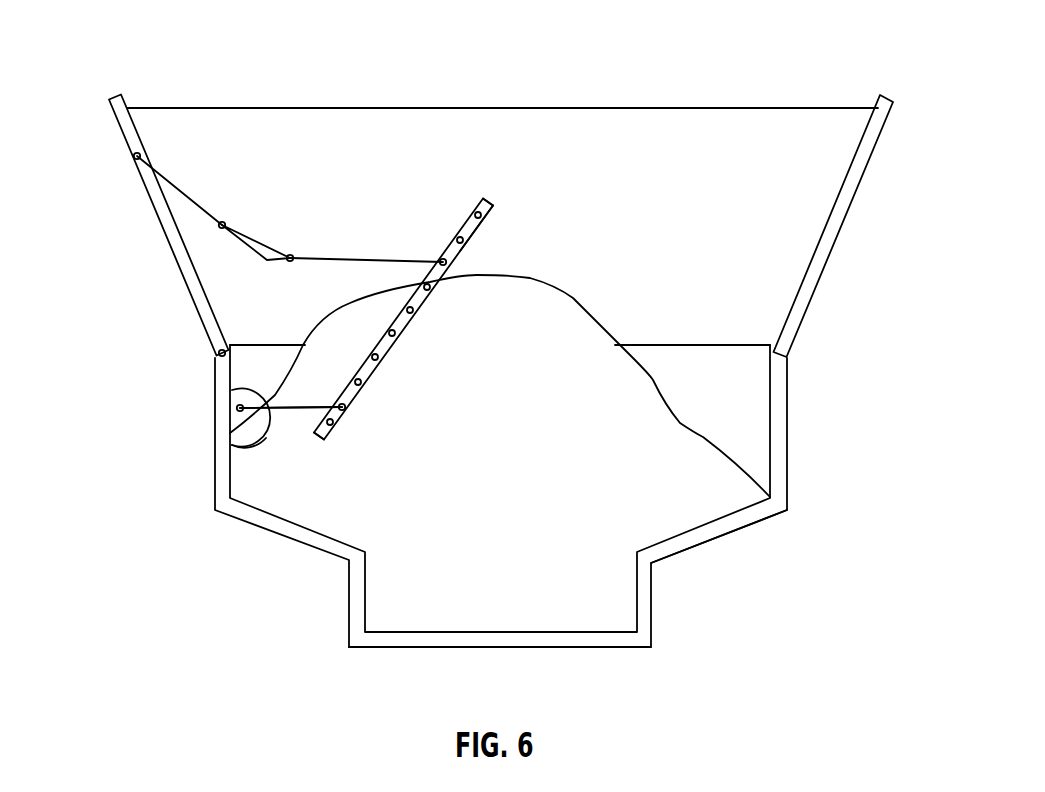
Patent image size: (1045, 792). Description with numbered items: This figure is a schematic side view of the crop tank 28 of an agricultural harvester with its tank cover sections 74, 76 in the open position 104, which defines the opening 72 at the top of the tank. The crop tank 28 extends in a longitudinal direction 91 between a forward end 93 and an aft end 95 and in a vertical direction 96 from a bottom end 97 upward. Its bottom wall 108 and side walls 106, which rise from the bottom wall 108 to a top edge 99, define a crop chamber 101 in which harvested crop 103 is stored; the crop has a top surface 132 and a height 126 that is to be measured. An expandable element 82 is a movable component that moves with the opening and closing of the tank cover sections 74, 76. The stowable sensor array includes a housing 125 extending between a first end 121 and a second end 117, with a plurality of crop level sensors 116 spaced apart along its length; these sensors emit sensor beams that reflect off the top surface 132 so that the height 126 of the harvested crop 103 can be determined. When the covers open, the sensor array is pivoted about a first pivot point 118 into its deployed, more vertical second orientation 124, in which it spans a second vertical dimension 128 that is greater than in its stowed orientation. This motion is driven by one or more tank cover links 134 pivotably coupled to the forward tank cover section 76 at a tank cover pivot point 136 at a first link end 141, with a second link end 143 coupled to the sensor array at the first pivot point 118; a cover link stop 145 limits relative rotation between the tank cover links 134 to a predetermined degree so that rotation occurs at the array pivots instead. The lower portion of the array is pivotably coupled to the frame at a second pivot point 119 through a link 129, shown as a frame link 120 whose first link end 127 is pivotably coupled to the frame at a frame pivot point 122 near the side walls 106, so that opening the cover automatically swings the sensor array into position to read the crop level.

The crop tank 28 is at (264, 77).
The opening 72 is at (503, 67).
The open position 104 is at (807, 61).
The crop chamber 101 is at (707, 147).
The expandable element 82 is at (599, 193).
The forward tank cover section 76 is at (169, 225).
The tank cover section 74 is at (834, 226).
The top edge 99 is at (233, 323).
The tank cover pivot point 136 is at (103, 173).
The first link end 141 is at (179, 175).
The cover link stop 145 is at (244, 201).
The tank cover link 134 is at (270, 221).
The second link end 143 is at (366, 239).
The first pivot point 118 is at (425, 236).
The second orientation 124 is at (425, 307).
The first end 121 is at (512, 183).
The housing 125 is at (491, 236).
The crop level sensors 116 is at (404, 318).
The second pivot point 119 is at (372, 423).
The second end 117 is at (339, 459).
The frame pivot point 122 is at (248, 420).
The link 129 is at (295, 369).
The frame link 120 is at (212, 409).
The first link end 127 is at (207, 474).
The top surface 132 is at (500, 364).
The harvested crop 103 is at (474, 460).
The side walls 106 is at (517, 496).
The aft end 95 is at (723, 542).
The bottom end 97 is at (356, 670).
The bottom wall 108 is at (500, 666).
The forward end 93 is at (170, 616).
The vertical direction 96 is at (101, 437).
The second vertical dimension 128 is at (935, 340).
The height 126 is at (796, 442).
The longitudinal direction 91 is at (499, 697).